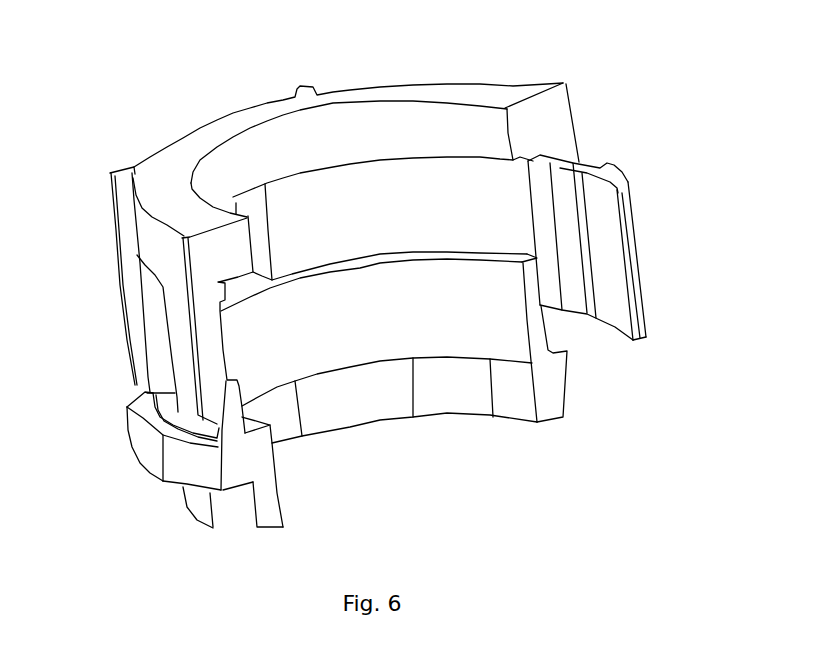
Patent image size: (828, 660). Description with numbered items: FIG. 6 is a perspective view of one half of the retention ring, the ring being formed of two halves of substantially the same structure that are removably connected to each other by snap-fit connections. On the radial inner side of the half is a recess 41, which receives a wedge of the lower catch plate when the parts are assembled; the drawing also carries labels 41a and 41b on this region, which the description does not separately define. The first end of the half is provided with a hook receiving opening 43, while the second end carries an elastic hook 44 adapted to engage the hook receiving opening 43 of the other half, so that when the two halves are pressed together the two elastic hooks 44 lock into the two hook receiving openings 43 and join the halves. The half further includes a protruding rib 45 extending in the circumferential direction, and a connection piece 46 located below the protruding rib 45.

The recess 41 is at (463, 202).
The first end of ring 41a is at (518, 158).
The second end of ring 41b is at (527, 263).
The hook receiving opening 43 is at (160, 330).
The elastic hook 44 is at (618, 183).
The protruding rib 45 is at (153, 430).
The connection piece 46 is at (198, 502).